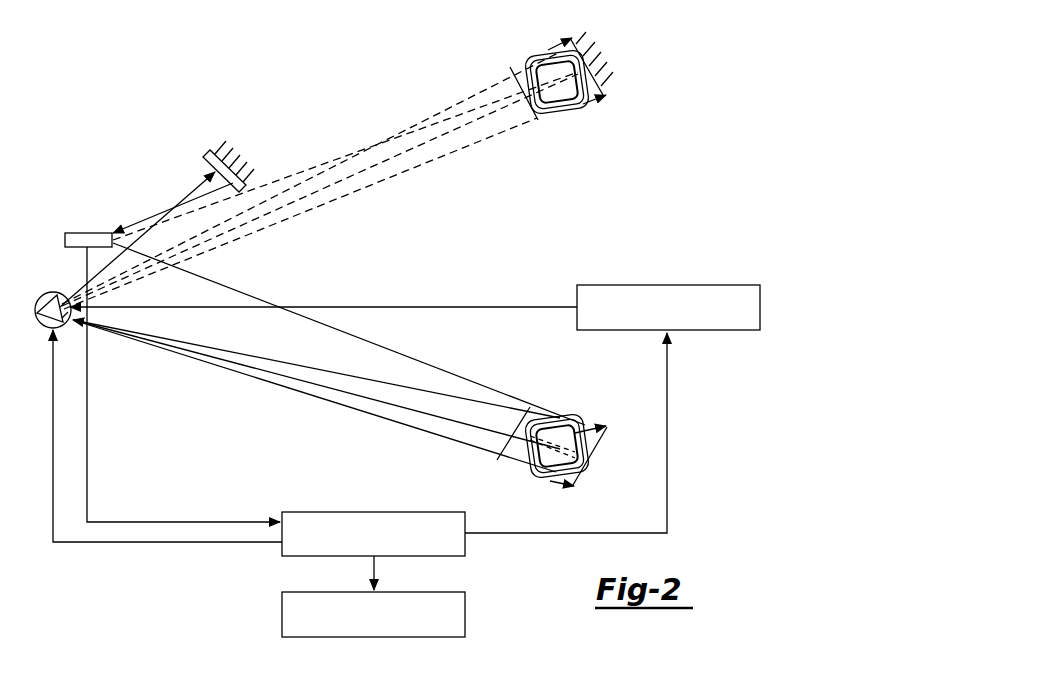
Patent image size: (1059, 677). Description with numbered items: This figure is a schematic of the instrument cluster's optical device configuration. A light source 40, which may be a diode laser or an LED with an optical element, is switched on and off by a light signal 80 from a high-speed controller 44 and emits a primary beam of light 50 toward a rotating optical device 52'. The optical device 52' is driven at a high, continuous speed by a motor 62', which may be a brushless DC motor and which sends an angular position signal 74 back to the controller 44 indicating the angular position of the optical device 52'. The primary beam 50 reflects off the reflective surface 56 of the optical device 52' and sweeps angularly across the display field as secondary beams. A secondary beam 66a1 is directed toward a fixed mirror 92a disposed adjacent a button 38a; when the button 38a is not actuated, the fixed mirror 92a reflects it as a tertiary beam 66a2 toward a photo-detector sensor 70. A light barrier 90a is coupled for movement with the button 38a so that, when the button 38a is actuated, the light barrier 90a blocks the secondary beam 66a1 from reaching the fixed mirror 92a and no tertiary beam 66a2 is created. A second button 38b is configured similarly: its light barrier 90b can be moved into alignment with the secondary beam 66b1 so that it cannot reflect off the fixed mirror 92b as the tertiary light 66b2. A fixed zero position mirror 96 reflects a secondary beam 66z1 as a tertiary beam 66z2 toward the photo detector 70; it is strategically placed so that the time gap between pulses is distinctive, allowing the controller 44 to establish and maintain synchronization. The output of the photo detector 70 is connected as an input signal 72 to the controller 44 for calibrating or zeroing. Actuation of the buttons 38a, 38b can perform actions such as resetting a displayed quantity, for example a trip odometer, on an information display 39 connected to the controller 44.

The button 38a is at (563, 100).
The button 38b is at (557, 424).
The information display 39 is at (466, 617).
The light source 40 is at (741, 285).
The controller 44 is at (305, 512).
The primary beam of light 50 is at (545, 306).
The optical device 52' is at (44, 278).
The reflective surface 56 is at (78, 320).
The motor 62' is at (35, 298).
The secondary beam 66a1 is at (490, 86).
The tertiary beam of light 66a2 is at (298, 172).
The secondary beam 66b1 is at (297, 376).
The tertiary light 66b2 is at (307, 321).
The secondary beam 66z1 is at (180, 198).
The tertiary beam 66z2 is at (150, 217).
The photo-detector sensor 70 is at (78, 233).
The input signal 72 is at (88, 456).
The angular position signal 74 is at (55, 422).
The light signal 80 is at (668, 406).
The light barrier 90a is at (527, 110).
The light barrier 90b is at (495, 447).
The fixed mirror 92a is at (605, 93).
The fixed mirror 92b is at (597, 446).
The fixed zero position mirror 96 is at (216, 148).